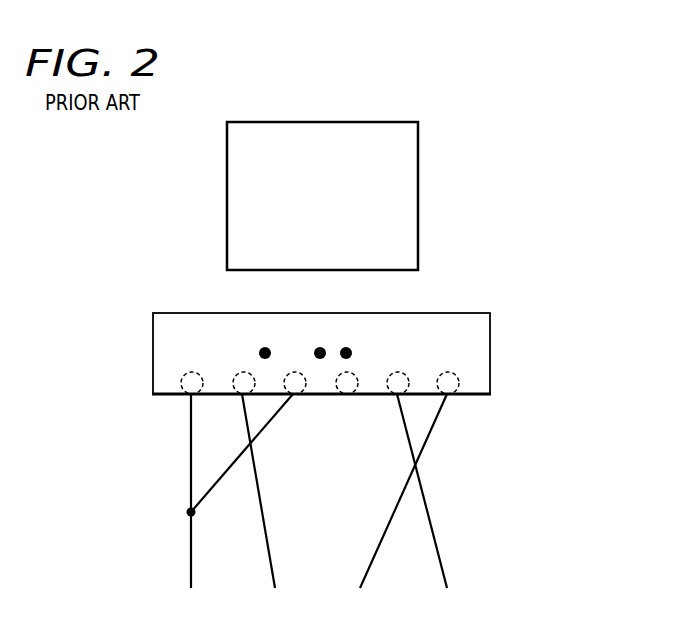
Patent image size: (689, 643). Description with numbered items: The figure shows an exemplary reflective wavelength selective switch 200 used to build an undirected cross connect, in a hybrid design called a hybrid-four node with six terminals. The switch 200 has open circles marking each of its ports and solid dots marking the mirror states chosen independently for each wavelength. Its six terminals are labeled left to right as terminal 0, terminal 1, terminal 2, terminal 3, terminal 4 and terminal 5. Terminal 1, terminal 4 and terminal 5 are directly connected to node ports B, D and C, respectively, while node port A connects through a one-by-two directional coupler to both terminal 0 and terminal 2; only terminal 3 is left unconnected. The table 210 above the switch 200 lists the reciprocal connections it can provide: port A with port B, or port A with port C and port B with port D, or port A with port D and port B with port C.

The table 210 is at (418, 150).
The reflective wavelength selective switch 200 is at (356, 467).
The terminal 0 is at (187, 372).
The terminal 1 is at (241, 372).
The terminal 2 is at (282, 370).
The terminal 3 is at (336, 370).
The terminal 4 is at (393, 372).
The terminal 5 is at (443, 372).